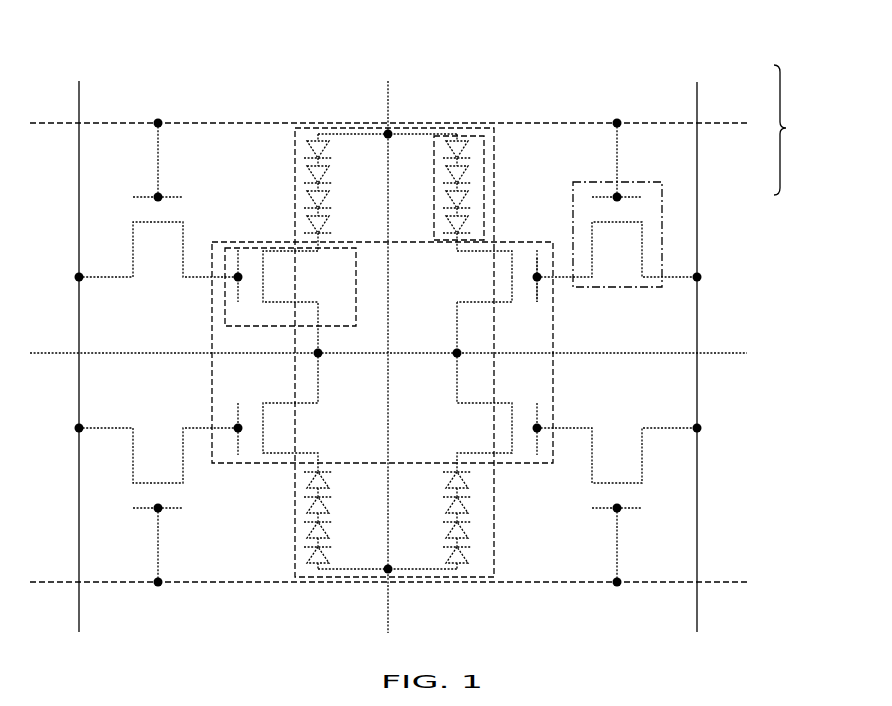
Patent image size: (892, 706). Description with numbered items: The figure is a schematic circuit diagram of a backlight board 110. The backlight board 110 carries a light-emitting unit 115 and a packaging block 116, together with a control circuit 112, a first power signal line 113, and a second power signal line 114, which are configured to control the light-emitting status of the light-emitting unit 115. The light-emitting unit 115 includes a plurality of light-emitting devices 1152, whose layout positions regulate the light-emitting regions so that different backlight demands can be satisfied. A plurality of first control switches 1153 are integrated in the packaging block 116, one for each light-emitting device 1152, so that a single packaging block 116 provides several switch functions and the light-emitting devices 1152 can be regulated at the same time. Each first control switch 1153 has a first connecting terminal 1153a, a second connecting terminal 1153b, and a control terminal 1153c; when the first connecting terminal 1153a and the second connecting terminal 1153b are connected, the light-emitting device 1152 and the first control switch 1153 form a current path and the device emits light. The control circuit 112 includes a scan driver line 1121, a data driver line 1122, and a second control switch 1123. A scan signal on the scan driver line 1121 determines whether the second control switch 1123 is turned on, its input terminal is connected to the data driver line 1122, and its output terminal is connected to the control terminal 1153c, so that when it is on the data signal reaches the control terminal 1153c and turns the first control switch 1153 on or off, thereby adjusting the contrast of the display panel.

The backlight board 110 is at (210, 42).
The control circuit 112 is at (794, 130).
The scan driver line 1121 is at (703, 123).
The data driver line 1122 is at (80, 102).
The second control switch 1123 is at (662, 222).
The first power signal line 113 is at (392, 102).
The second power signal line 114 is at (727, 353).
The light-emitting unit 115 is at (328, 127).
The light-emitting device 1152 is at (485, 153).
The packaging block 116 is at (228, 242).
The first control switch 1153 is at (270, 249).
The first connecting terminal 1153a is at (492, 252).
The second connecting terminal 1153b is at (492, 302).
The control terminal 1153c is at (537, 258).